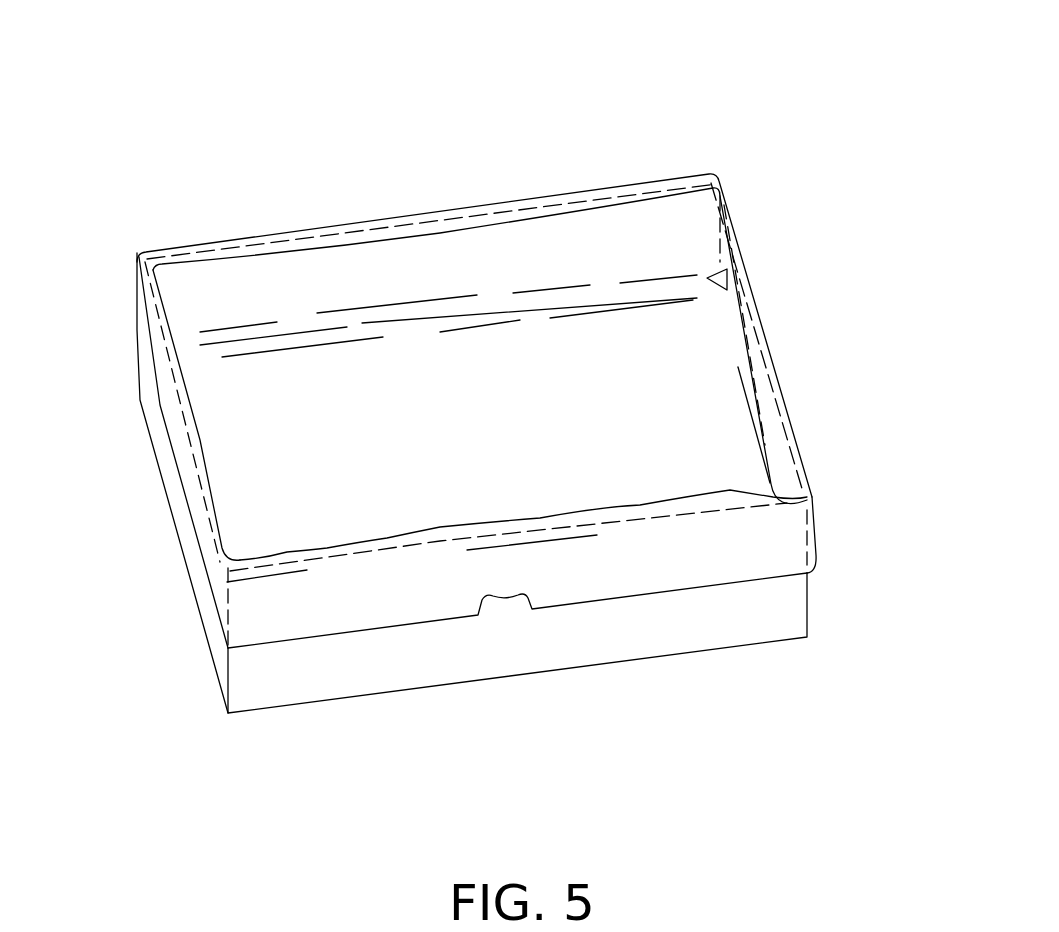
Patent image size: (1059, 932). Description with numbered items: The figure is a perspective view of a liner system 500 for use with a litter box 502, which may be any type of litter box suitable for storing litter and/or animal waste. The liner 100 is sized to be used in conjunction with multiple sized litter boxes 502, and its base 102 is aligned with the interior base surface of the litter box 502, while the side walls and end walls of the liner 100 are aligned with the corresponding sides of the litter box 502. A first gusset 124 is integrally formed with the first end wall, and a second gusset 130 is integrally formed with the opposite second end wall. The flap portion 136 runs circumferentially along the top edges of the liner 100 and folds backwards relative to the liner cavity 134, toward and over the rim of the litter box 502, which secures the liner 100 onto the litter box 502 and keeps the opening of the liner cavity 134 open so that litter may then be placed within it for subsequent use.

The liner system 500 is at (729, 114).
The liner 100 is at (203, 276).
The base 102 is at (399, 368).
The first gusset 124 is at (197, 423).
The second gusset 130 is at (777, 413).
The liner cavity 134 is at (677, 344).
The flap portion 136 is at (369, 600).
The litter box 502 is at (700, 632).